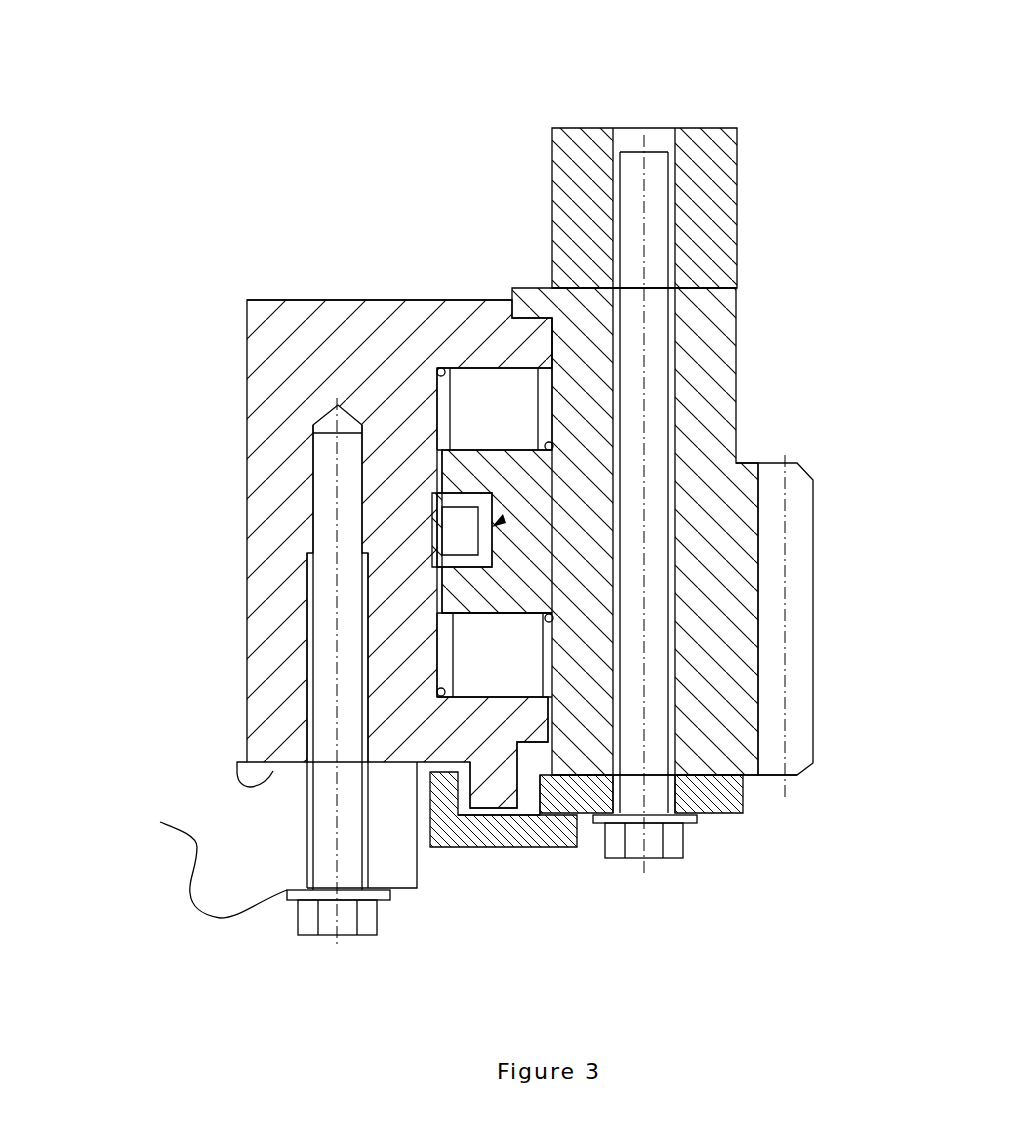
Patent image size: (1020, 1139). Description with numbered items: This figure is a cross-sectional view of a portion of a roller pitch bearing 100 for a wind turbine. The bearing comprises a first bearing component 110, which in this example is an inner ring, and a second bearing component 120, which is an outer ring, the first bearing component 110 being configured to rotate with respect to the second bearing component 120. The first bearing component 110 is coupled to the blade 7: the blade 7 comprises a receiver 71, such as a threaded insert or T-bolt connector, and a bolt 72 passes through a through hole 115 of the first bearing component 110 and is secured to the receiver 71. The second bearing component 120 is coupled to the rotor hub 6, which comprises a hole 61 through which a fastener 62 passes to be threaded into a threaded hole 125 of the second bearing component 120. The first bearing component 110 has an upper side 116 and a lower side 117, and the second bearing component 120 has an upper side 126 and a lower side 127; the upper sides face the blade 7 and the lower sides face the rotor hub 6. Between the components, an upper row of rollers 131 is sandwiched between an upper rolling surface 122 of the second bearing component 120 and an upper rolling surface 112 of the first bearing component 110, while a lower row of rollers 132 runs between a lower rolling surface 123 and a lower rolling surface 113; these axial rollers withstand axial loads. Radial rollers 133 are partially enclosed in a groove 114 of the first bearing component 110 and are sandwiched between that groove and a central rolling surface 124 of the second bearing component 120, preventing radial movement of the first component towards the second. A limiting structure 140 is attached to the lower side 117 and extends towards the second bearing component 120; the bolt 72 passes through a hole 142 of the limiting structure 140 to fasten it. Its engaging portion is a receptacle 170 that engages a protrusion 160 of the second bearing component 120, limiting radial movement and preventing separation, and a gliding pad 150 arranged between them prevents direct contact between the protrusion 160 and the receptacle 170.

The roller pitch bearing 100 is at (449, 135).
The blade 7 is at (713, 198).
The receiver 71 is at (630, 127).
The bolt 72 is at (650, 860).
The first bearing component 110 is at (707, 342).
The upper rolling surface of the first bearing component 112 is at (505, 448).
The lower rolling surface of the first bearing component 113 is at (517, 612).
The groove 114 is at (500, 521).
The through hole 115 is at (680, 645).
The upper side 116 is at (708, 287).
The lower side 117 is at (723, 773).
The second bearing component 120 is at (278, 322).
The upper rolling surface of the second bearing component 122 is at (475, 352).
The lower rolling surface of the second bearing component 123 is at (453, 732).
The central rolling surface 124 is at (458, 537).
The threaded hole 125 is at (303, 680).
The upper side 126 is at (313, 300).
The lower side 127 is at (268, 778).
The upper row of rollers 131 is at (522, 390).
The lower row of rollers 132 is at (447, 662).
The radial rollers 133 is at (472, 645).
The limiting structure 140 is at (745, 806).
The hole of the limiting structure 142 is at (685, 793).
The gliding pad 150 is at (405, 785).
The protrusion 160 is at (490, 782).
The receptacle 170 is at (540, 830).
The rotor hub 6 is at (220, 856).
The hole 61 is at (192, 895).
The fastener 62 is at (310, 937).